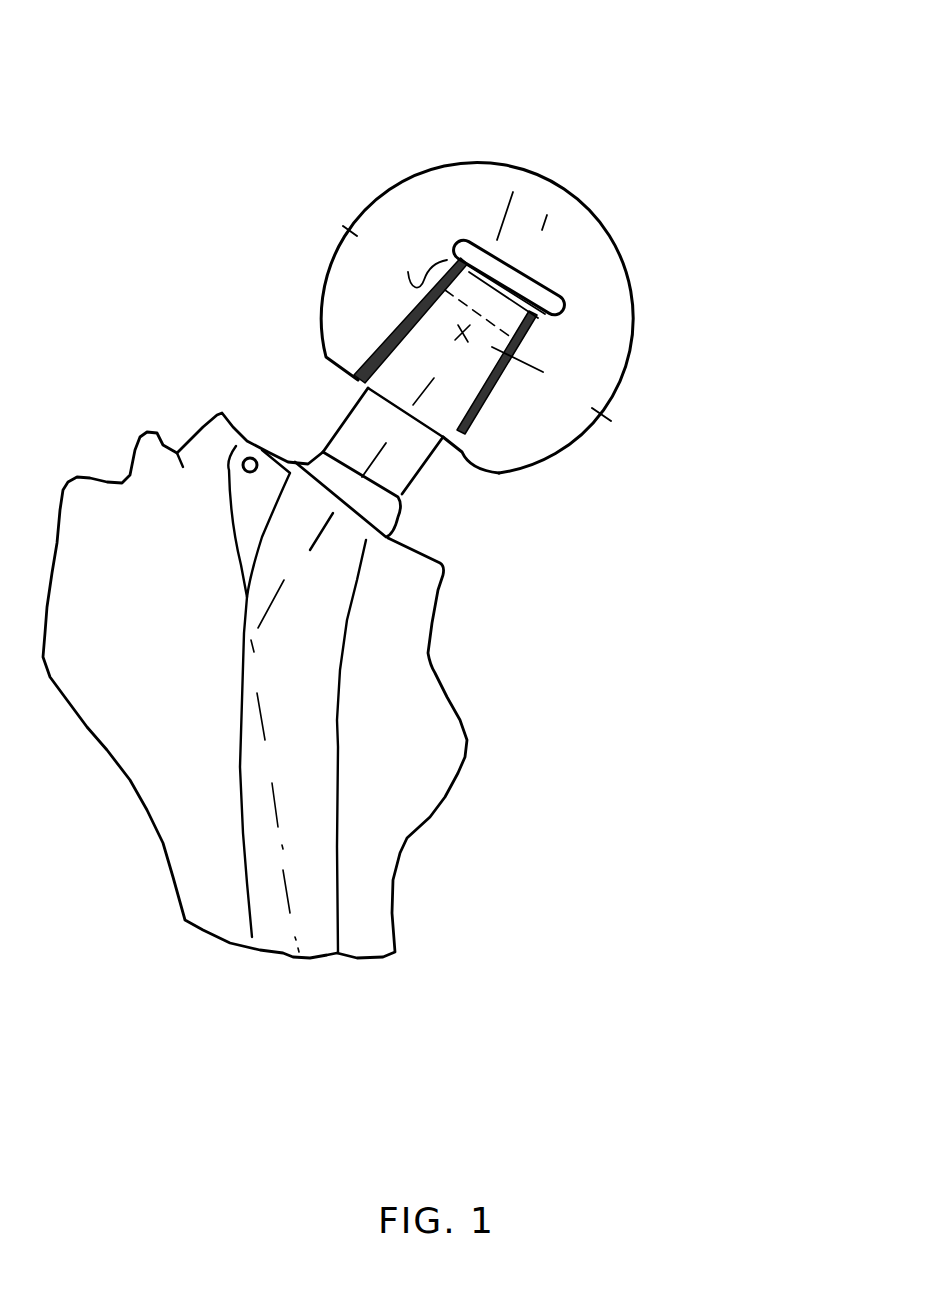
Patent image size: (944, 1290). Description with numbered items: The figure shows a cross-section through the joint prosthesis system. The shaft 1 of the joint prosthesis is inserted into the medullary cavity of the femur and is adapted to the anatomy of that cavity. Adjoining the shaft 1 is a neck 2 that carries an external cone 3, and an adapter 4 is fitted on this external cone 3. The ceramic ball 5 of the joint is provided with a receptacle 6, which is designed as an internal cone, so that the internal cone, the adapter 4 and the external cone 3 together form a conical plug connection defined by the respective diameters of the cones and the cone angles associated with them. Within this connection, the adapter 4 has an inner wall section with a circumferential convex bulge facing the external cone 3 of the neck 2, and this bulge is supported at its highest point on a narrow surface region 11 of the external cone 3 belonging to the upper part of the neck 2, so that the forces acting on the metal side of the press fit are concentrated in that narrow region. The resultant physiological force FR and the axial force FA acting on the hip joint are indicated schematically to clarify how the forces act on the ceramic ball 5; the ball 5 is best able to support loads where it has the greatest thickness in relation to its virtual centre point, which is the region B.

The shaft 1 is at (315, 827).
The neck 2 is at (403, 493).
The external cone 3 is at (464, 418).
The adapter 4 is at (520, 363).
The ceramic ball 5 is at (360, 215).
The receptacle 6 is at (352, 388).
The narrow surface region 11 is at (490, 341).
The region B is at (423, 259).
The resultant physiological force FR is at (518, 170).
The axial force FA is at (568, 192).